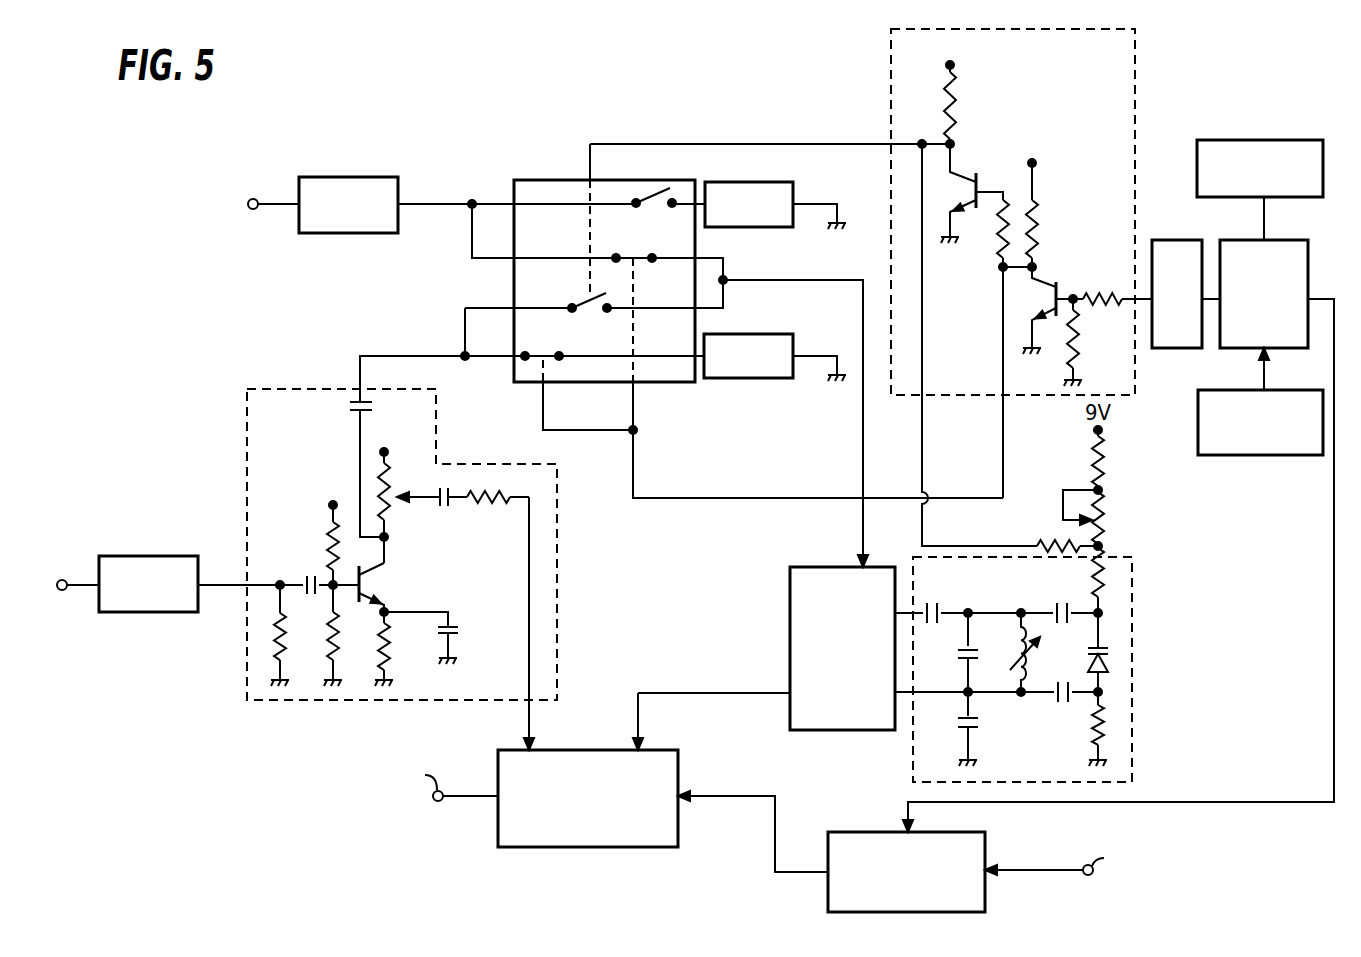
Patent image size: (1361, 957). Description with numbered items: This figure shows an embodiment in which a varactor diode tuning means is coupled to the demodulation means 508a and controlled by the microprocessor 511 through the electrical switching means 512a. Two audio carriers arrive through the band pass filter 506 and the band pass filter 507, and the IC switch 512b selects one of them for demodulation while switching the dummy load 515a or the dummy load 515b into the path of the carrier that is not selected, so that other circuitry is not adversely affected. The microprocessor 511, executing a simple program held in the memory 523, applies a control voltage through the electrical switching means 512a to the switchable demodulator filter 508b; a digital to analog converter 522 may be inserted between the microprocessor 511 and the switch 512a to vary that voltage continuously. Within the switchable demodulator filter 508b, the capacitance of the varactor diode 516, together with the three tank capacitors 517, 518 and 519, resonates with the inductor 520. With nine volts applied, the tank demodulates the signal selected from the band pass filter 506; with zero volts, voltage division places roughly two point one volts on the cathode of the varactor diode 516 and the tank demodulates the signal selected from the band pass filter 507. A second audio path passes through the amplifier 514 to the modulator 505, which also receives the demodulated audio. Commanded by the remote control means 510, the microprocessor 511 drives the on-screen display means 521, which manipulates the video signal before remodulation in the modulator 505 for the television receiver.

The modulator 505 is at (662, 750).
The band pass filter 506 is at (127, 556).
The band pass filter 507 is at (329, 177).
The demodulation means 508a is at (832, 567).
The switchable demodulator filter 508b is at (1045, 669).
The remote control means 510 is at (1273, 390).
The microprocessor 511 is at (1278, 240).
The electrical switching means 512a is at (1135, 88).
The IC switch 512b is at (553, 180).
The amplifier 514 is at (283, 389).
The dummy load 515a is at (738, 182).
The dummy load 515b is at (738, 334).
The varactor diode 516 is at (1110, 655).
The tank capacitor 517 is at (947, 624).
The tank capacitor 518 is at (1063, 604).
The tank capacitor 519 is at (1061, 710).
The inductor 520 is at (1040, 670).
The on-screen display means 521 is at (980, 834).
The digital to analog converter 522 is at (1183, 240).
The memory 523 is at (1279, 140).